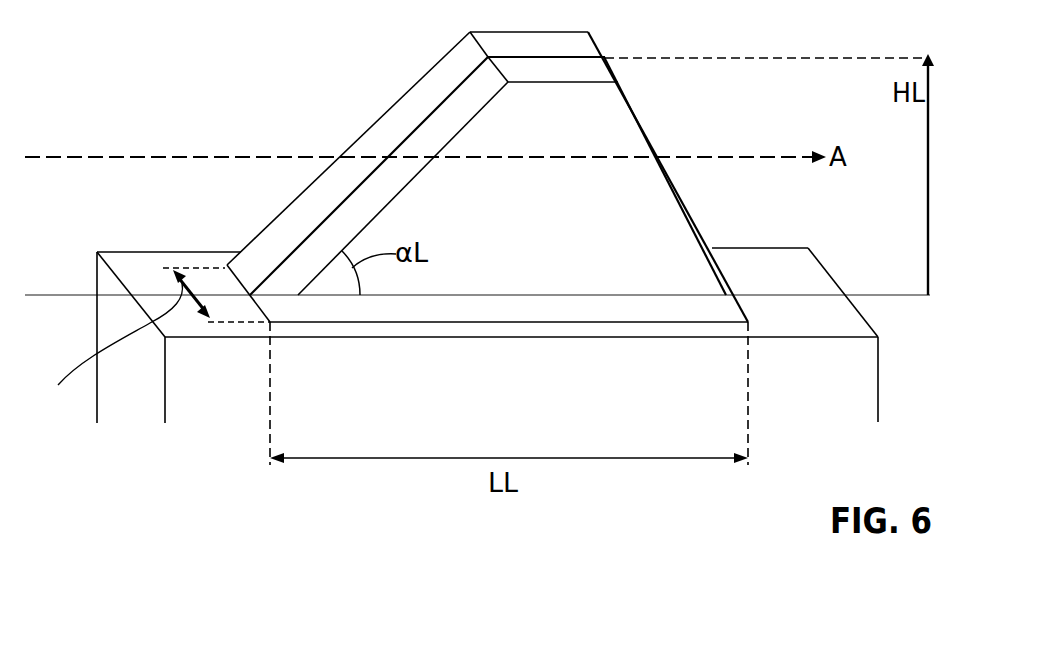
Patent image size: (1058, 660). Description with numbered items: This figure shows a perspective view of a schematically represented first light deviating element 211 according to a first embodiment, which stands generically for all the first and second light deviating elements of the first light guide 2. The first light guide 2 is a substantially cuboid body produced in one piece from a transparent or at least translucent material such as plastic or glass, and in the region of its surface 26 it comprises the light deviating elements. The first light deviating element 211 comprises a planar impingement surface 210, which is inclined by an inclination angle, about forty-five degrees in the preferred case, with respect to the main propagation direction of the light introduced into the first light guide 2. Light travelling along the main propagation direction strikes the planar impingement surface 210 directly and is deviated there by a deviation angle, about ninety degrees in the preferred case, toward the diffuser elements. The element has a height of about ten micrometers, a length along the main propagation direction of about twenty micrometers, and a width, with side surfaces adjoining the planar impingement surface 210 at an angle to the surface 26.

The first light guide 2 is at (185, 312).
The surface 26 is at (148, 263).
The planar impingement surface 210 is at (481, 175).
The first light deviating element 211 is at (410, 109).